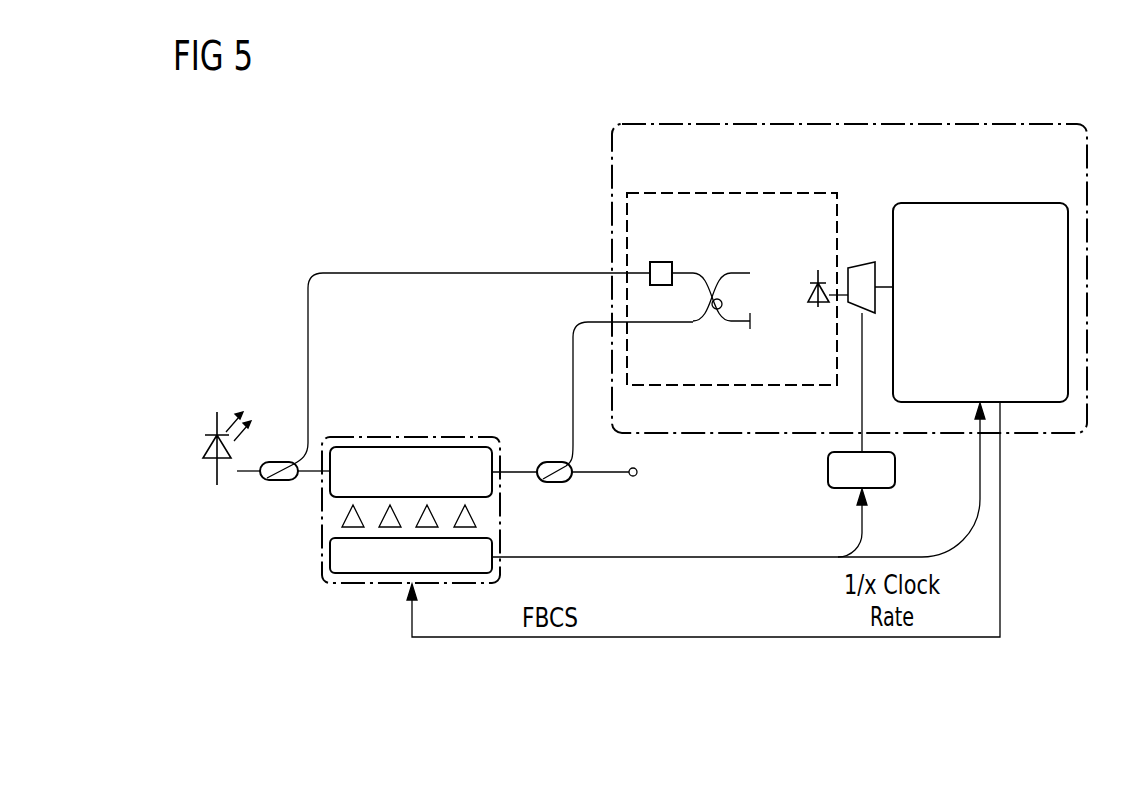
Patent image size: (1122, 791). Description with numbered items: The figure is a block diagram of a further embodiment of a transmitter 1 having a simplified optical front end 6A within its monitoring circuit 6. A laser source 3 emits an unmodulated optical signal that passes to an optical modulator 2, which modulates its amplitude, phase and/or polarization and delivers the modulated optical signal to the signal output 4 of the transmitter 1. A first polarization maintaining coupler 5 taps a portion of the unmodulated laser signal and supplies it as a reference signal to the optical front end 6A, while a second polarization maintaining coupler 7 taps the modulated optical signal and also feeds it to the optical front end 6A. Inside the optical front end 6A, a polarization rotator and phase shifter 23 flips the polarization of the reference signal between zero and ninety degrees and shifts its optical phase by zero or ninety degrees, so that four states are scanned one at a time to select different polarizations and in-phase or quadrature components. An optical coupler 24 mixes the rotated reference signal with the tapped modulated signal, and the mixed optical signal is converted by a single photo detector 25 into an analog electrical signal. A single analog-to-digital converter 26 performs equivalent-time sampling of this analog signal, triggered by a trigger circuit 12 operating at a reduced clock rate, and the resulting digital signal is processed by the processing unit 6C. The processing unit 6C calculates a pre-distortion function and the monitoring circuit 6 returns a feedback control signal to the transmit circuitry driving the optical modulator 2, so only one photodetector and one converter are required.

The transmitter 1 is at (1023, 107).
The optical modulator 2 is at (415, 437).
The laser source 3 is at (205, 440).
The signal output 4 is at (634, 477).
The first polarization maintaining coupler 5 is at (283, 482).
The monitoring unit 6 is at (790, 124).
The optical front end 6A is at (717, 193).
The processing unit 6C is at (968, 203).
The second polarization maintaining coupler 7 is at (556, 483).
The trigger circuit 12 is at (895, 470).
The polarization rotator and phase shifter 23 is at (661, 262).
The optical coupler 24 is at (718, 310).
The photo detector 25 is at (808, 290).
The analog-to-digital converter 26 is at (860, 262).